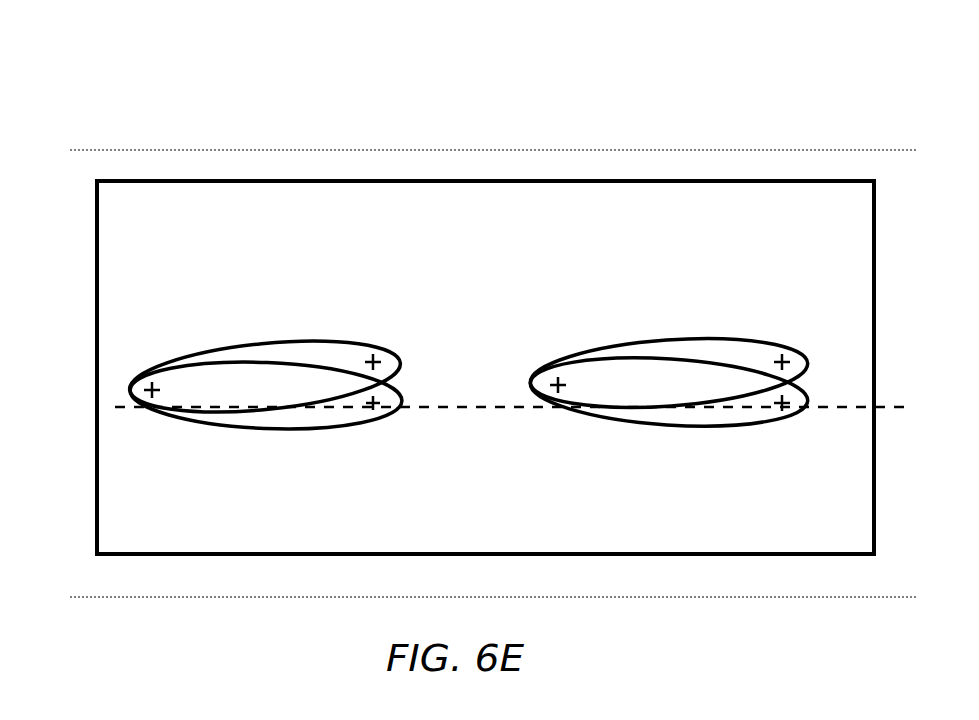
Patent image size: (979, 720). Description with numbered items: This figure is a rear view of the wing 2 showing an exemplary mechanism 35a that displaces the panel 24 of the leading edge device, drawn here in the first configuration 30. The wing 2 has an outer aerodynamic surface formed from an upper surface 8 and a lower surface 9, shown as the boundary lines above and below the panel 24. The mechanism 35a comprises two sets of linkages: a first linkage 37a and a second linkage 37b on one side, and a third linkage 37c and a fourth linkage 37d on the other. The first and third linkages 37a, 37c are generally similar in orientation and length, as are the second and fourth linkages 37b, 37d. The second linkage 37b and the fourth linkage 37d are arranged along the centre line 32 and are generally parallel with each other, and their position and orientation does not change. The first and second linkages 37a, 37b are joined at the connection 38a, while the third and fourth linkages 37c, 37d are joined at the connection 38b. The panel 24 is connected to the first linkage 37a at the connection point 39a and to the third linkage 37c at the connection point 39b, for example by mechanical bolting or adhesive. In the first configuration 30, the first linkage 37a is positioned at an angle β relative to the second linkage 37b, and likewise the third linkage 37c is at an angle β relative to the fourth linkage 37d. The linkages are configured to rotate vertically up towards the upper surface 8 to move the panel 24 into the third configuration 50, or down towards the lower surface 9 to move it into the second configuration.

The first configuration 30 is at (174, 116).
The upper surface 8 is at (690, 150).
The lower surface 9 is at (265, 596).
The wing 2 is at (763, 172).
The panel 24 is at (127, 196).
The centre line 32 is at (853, 398).
The mechanism 35a is at (128, 325).
The first linkage 37a is at (300, 356).
The second linkage 37b is at (328, 412).
The third linkage 37c is at (703, 356).
The fourth linkage 37d is at (730, 420).
The connection 38a is at (128, 395).
The connection 38b is at (530, 384).
The connection point 39a is at (372, 357).
The connection point 39b is at (770, 350).
The third configuration 50 is at (76, 716).